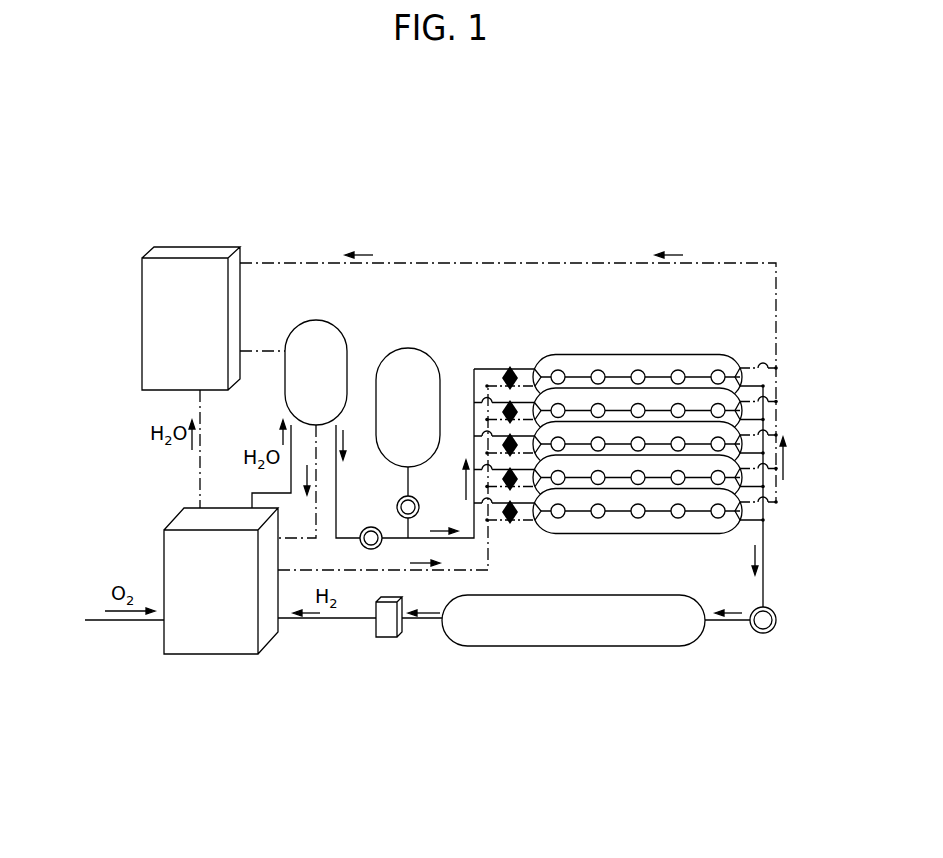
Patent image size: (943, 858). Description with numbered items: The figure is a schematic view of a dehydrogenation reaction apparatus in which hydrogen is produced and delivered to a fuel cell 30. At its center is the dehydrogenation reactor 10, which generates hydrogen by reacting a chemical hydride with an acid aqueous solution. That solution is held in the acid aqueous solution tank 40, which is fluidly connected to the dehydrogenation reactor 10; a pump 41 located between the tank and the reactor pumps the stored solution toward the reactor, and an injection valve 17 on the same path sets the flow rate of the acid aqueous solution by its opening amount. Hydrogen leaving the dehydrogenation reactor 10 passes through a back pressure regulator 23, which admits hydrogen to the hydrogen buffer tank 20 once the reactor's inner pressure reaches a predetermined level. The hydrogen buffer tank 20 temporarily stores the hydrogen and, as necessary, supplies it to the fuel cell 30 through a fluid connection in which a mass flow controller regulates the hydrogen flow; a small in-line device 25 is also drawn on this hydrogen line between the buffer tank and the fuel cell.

The dehydrogenation reactor 10 is at (650, 347).
The injection valve 17 is at (511, 365).
The hydrogen buffer tank 20 is at (568, 662).
The back pressure regulator 23 is at (757, 633).
The valve 25 is at (385, 641).
The fuel cell 30 is at (208, 665).
The acid aqueous solution tank 40 is at (428, 347).
The pump 41 is at (396, 500).